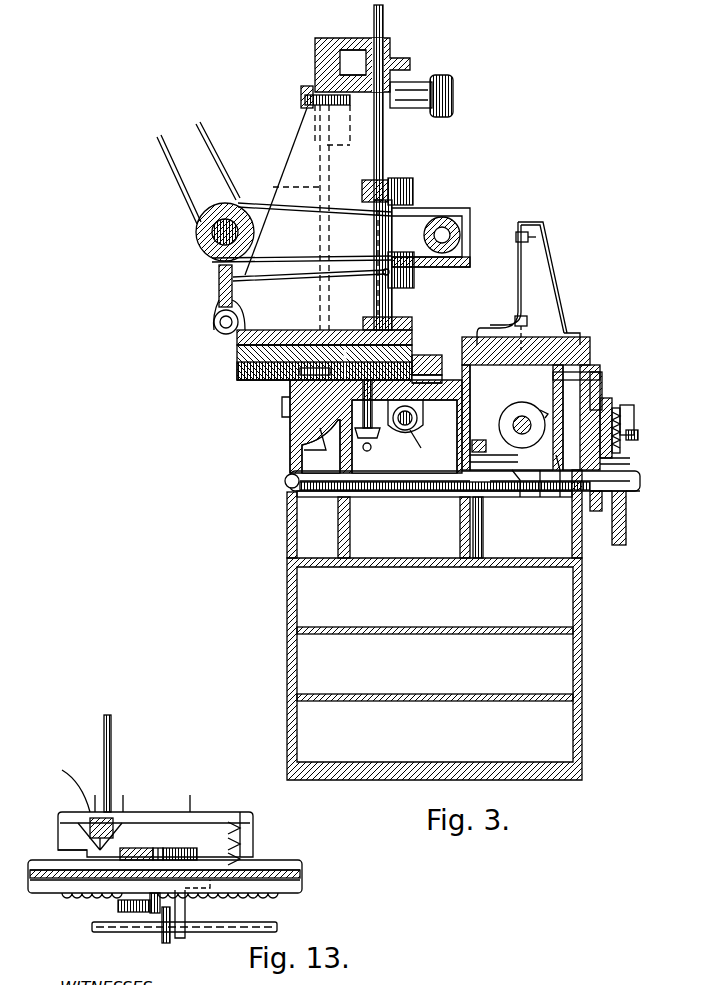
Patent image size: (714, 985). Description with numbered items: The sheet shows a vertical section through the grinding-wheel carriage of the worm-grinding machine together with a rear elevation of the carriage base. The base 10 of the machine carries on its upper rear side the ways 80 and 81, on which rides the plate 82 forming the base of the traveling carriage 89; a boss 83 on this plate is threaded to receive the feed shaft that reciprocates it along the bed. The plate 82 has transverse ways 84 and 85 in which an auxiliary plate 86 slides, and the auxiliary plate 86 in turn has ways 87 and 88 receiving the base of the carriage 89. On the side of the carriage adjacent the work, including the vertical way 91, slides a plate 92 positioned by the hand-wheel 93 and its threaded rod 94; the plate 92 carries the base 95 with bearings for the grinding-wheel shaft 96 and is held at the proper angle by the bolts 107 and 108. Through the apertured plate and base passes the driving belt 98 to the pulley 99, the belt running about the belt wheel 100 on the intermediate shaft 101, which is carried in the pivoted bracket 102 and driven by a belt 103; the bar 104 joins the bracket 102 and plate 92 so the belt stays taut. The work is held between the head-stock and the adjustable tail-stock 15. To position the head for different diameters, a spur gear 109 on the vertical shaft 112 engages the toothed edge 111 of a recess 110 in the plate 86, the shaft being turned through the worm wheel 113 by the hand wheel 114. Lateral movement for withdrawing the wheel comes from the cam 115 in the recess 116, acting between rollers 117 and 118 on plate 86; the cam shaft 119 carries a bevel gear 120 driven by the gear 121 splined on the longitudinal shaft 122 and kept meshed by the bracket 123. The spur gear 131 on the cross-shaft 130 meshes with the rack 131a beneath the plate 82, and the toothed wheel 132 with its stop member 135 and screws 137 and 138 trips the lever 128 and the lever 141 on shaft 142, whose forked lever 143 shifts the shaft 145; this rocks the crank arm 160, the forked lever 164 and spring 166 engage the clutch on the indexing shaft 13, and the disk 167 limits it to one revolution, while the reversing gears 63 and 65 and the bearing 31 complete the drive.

In FIG. 3, the threaded rod 94 is at (384, 17).
In FIG. 3, the hand-wheel 93 is at (410, 62).
In FIG. 3, the hand wheel 114 is at (452, 86).
In FIG. 3, the worm wheel 113 is at (302, 96).
In FIG. 3, the traveling carriage 89 is at (297, 217).
In FIG. 13, the traveling carriage 89 is at (238, 815).
In FIG. 3, the vertical shaft 112 is at (275, 187).
In FIG. 13, the vertical shaft 112 is at (111, 756).
In FIG. 3, the plate 92 is at (398, 180).
In FIG. 3, the bolt 107 is at (406, 190).
In FIG. 3, the base 95 is at (400, 198).
In FIG. 3, the grinding-wheel shaft 96 is at (470, 210).
In FIG. 3, the pulley 99 is at (460, 232).
In FIG. 3, the tail-stock 15 is at (532, 237).
In FIG. 3, the belt wheel 100 is at (196, 234).
In FIG. 3, the intermediate shaft 101 is at (203, 246).
In FIG. 3, the driving belt 98 is at (212, 262).
In FIG. 3, the belt 103 is at (202, 131).
In FIG. 3, the bracket 102 is at (218, 287).
In FIG. 3, the bar 104 is at (271, 283).
In FIG. 3, the bolt 108 is at (415, 281).
In FIG. 3, the vertical way 91 is at (384, 300).
In FIG. 3, the roller 117 is at (395, 335).
In FIG. 13, the roller 117 is at (168, 852).
In FIG. 3, the cam 115 is at (403, 347).
In FIG. 13, the cam 115 is at (126, 849).
In FIG. 3, the roller 118 is at (430, 360).
In FIG. 3, the auxiliary plate 86 is at (237, 359).
In FIG. 13, the auxiliary plate 86 is at (240, 844).
In FIG. 3, the recess 116 is at (237, 377).
In FIG. 13, the recess 116 is at (137, 851).
In FIG. 3, the cam shaft 119 is at (428, 379).
In FIG. 13, the cam shaft 119 is at (78, 904).
In FIG. 3, the plate 82 is at (250, 386).
In FIG. 13, the plate 82 is at (302, 891).
In FIG. 3, the way 80 is at (290, 414).
In FIG. 3, the opening 131a is at (322, 443).
In FIG. 3, the bevel gear 120 is at (375, 438).
In FIG. 13, the bevel gear 120 is at (130, 930).
In FIG. 3, the shaft 122 is at (371, 450).
In FIG. 13, the shaft 122 is at (128, 934).
In FIG. 3, the shaft 31 is at (417, 430).
In FIG. 3, the way 81 is at (425, 427).
In FIG. 3, the boss 83 is at (426, 448).
In FIG. 13, the boss 83 is at (148, 912).
In FIG. 3, the forked lever 143 is at (531, 403).
In FIG. 3, the indexing shaft 13 is at (499, 421).
In FIG. 3, the disk member 167 is at (522, 420).
In FIG. 3, the coiled spring 166 is at (542, 404).
In FIG. 3, the gear 65 is at (494, 444).
In FIG. 3, the shaft 142 is at (602, 378).
In FIG. 3, the lever 141 is at (614, 402).
In FIG. 3, the adjustable contact screw 137 is at (622, 413).
In FIG. 3, the stop member 135 is at (635, 420).
In FIG. 3, the adjusting screw 138 is at (638, 438).
In FIG. 3, the crank or lever 128 is at (630, 461).
In FIG. 3, the cross-shaft 130 is at (642, 484).
In FIG. 3, the spur gear 131 is at (350, 514).
In FIG. 3, the forked lever 164 is at (517, 494).
In FIG. 3, the shaft 145 is at (547, 490).
In FIG. 3, the crank arm 160 is at (560, 491).
In FIG. 3, the gear 63 is at (483, 541).
In FIG. 3, the toothed wheel 132 is at (628, 540).
In FIG. 3, the base 10 is at (434, 669).
In FIG. 13, the way 88 is at (58, 814).
In FIG. 13, the spur gear 109 is at (60, 785).
In FIG. 13, the toothed edge 111 is at (96, 822).
In FIG. 13, the recess 110 is at (130, 814).
In FIG. 13, the way 87 is at (240, 828).
In FIG. 13, the way 84 is at (240, 859).
In FIG. 13, the way 85 is at (60, 851).
In FIG. 13, the bevel gear 121 is at (164, 945).
In FIG. 13, the bracket 123 is at (183, 940).